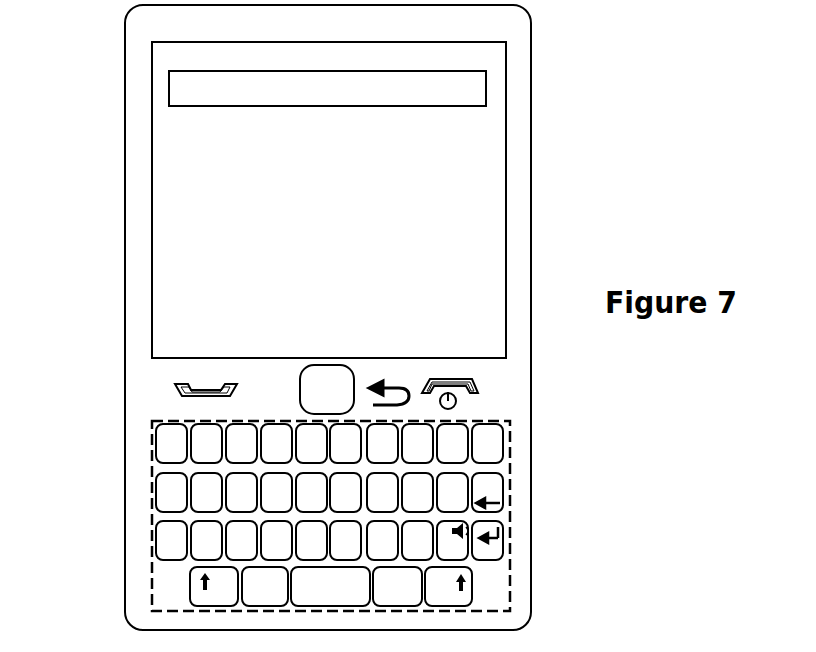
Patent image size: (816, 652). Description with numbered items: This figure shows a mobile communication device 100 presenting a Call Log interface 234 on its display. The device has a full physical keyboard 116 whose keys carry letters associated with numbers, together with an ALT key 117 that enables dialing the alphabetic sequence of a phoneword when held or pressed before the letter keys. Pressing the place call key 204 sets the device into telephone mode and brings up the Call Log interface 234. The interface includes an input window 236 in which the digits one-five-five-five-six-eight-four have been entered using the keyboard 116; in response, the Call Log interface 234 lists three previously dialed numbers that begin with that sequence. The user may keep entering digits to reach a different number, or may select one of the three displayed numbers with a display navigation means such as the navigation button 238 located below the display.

The mobile communication device 100 is at (588, 73).
The full physical keyboard 116 is at (510, 463).
The ALT key 117 is at (165, 527).
The place call key 204 is at (197, 384).
The Call Log interface 234 is at (162, 133).
The input window 236 is at (399, 87).
The navigation button 238 is at (317, 380).